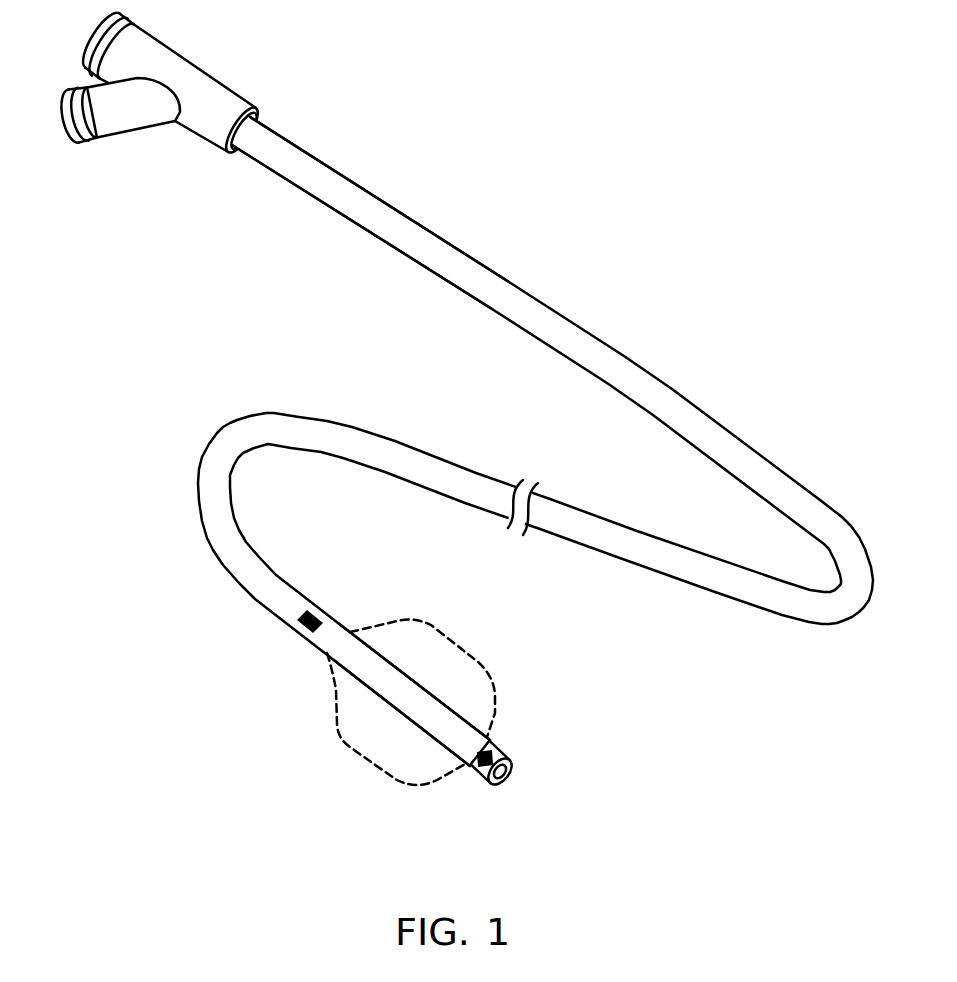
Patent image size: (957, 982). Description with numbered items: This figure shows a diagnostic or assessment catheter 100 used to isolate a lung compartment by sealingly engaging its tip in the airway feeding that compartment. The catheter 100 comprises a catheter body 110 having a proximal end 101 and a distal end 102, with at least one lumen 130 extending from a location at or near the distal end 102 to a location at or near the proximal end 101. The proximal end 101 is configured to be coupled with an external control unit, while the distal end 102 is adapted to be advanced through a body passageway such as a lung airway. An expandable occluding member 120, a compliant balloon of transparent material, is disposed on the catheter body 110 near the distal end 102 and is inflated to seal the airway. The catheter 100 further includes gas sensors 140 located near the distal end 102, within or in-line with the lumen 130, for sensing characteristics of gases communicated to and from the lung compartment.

The catheter 100 is at (467, 421).
The proximal end 101 is at (325, 178).
The distal end 102 is at (325, 652).
The catheter body 110 is at (587, 328).
The expandable occluding member 120 is at (482, 652).
The lumen 130 is at (511, 777).
The gas sensor 140 is at (297, 620).